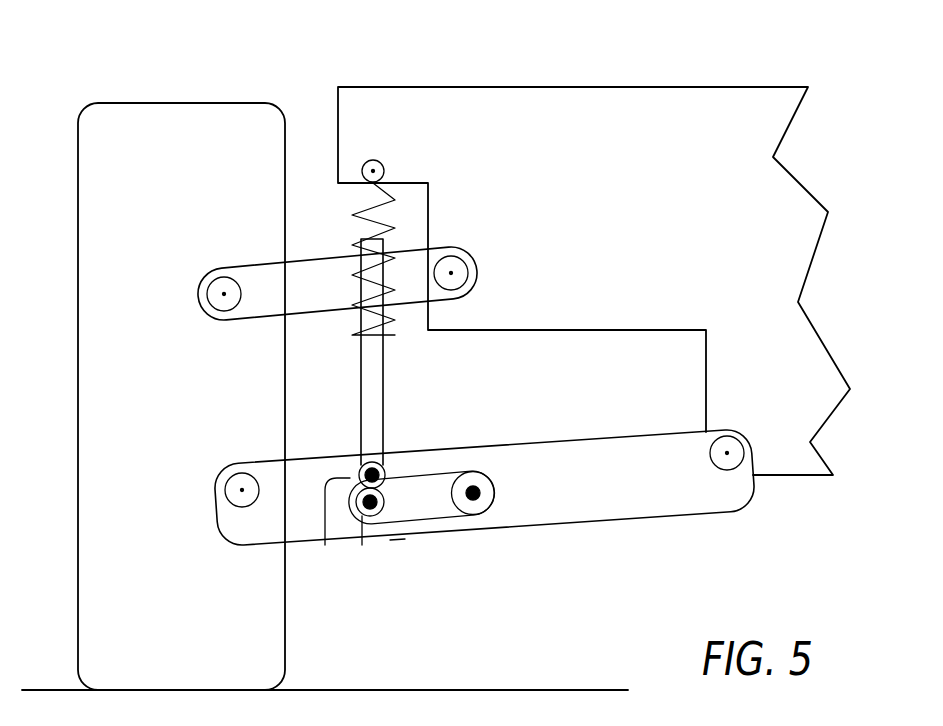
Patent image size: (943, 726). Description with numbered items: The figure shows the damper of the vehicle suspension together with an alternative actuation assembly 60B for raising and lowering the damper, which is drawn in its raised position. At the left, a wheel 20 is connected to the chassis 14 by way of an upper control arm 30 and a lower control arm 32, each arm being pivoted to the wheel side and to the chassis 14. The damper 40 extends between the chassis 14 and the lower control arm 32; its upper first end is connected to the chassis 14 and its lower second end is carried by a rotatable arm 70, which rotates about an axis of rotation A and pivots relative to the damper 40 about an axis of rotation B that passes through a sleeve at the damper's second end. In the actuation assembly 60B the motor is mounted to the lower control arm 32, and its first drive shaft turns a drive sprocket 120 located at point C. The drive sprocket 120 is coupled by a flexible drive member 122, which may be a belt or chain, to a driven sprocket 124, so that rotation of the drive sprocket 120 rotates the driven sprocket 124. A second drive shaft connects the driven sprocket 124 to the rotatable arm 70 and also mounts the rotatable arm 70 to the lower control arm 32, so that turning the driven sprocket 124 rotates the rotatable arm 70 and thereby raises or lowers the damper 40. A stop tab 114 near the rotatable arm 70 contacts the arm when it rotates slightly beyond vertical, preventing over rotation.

The chassis 14 is at (587, 86).
The wheel 20 is at (78, 160).
The upper control arm 30 is at (317, 277).
The lower control arm 32 is at (655, 492).
The damper 40 is at (360, 415).
The rotatable arm 70 is at (325, 545).
The stop tab 114 is at (387, 480).
The drive sprocket 120 is at (495, 502).
The flexible drive member 122 is at (437, 518).
The driven sprocket 124 is at (362, 545).
The actuation assembly 60B is at (397, 545).
The axis of rotation A is at (378, 516).
The axis of rotation B is at (387, 488).
The pivot point C is at (473, 493).